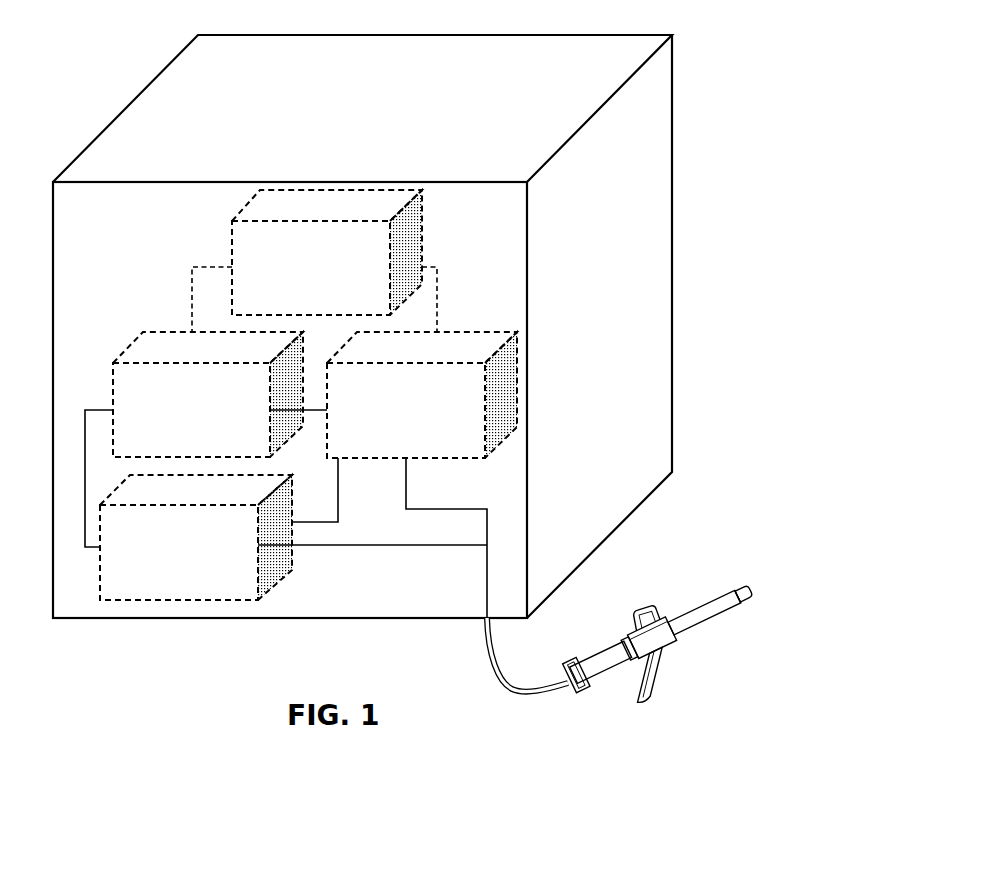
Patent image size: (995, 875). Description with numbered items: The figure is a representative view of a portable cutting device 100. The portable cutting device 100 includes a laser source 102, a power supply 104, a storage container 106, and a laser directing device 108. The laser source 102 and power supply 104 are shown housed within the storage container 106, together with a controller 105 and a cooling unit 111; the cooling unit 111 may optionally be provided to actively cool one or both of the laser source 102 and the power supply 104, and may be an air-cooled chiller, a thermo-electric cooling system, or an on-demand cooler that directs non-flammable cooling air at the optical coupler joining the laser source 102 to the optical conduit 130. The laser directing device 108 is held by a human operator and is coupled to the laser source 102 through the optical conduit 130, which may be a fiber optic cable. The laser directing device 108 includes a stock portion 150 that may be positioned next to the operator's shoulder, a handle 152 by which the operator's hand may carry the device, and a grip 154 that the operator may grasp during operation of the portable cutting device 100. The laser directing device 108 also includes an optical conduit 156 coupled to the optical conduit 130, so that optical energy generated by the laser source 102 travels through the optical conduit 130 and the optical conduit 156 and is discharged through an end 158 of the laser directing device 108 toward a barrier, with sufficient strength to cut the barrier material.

The portable cutting device 100 is at (732, 117).
The laser source 102 is at (421, 451).
The power supply 104 is at (206, 451).
The controller 105 is at (194, 572).
The storage container 106 is at (674, 253).
The laser directing device 108 is at (612, 622).
The cooling unit 111 is at (326, 301).
The optical conduit 130 is at (483, 653).
The stock portion 150 is at (574, 701).
The handle 152 is at (671, 597).
The grip 154 is at (646, 702).
The optical conduit 156 is at (733, 601).
The end 158 is at (744, 580).